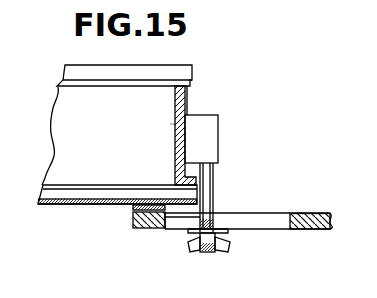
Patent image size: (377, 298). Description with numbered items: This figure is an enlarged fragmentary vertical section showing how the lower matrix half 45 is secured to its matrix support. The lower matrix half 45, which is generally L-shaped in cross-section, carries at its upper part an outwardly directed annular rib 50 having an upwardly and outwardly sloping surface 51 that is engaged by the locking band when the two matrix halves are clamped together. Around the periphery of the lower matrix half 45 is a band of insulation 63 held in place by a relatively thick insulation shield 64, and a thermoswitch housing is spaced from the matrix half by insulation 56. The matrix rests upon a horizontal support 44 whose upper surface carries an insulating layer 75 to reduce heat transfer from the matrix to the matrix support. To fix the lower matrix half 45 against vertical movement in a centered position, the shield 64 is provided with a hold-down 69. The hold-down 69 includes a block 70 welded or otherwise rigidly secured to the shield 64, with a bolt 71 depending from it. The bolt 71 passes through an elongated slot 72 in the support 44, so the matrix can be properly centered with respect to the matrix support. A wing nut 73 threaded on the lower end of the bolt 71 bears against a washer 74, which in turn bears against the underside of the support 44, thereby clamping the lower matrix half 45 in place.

The horizontal support 44 is at (325, 235).
The lower matrix half 45 is at (83, 192).
The annular rib 50 is at (193, 73).
The sloping surface 51 is at (80, 86).
The insulation 56 is at (53, 206).
The insulation 63 is at (175, 124).
The insulation shield 64 is at (187, 106).
The hold-down 69 is at (229, 165).
The block 70 is at (207, 133).
The bolt 71 is at (213, 189).
The elongated slot 72 is at (260, 224).
The wing nut 73 is at (230, 246).
The washer 74 is at (185, 233).
The insulating layer 75 is at (298, 211).